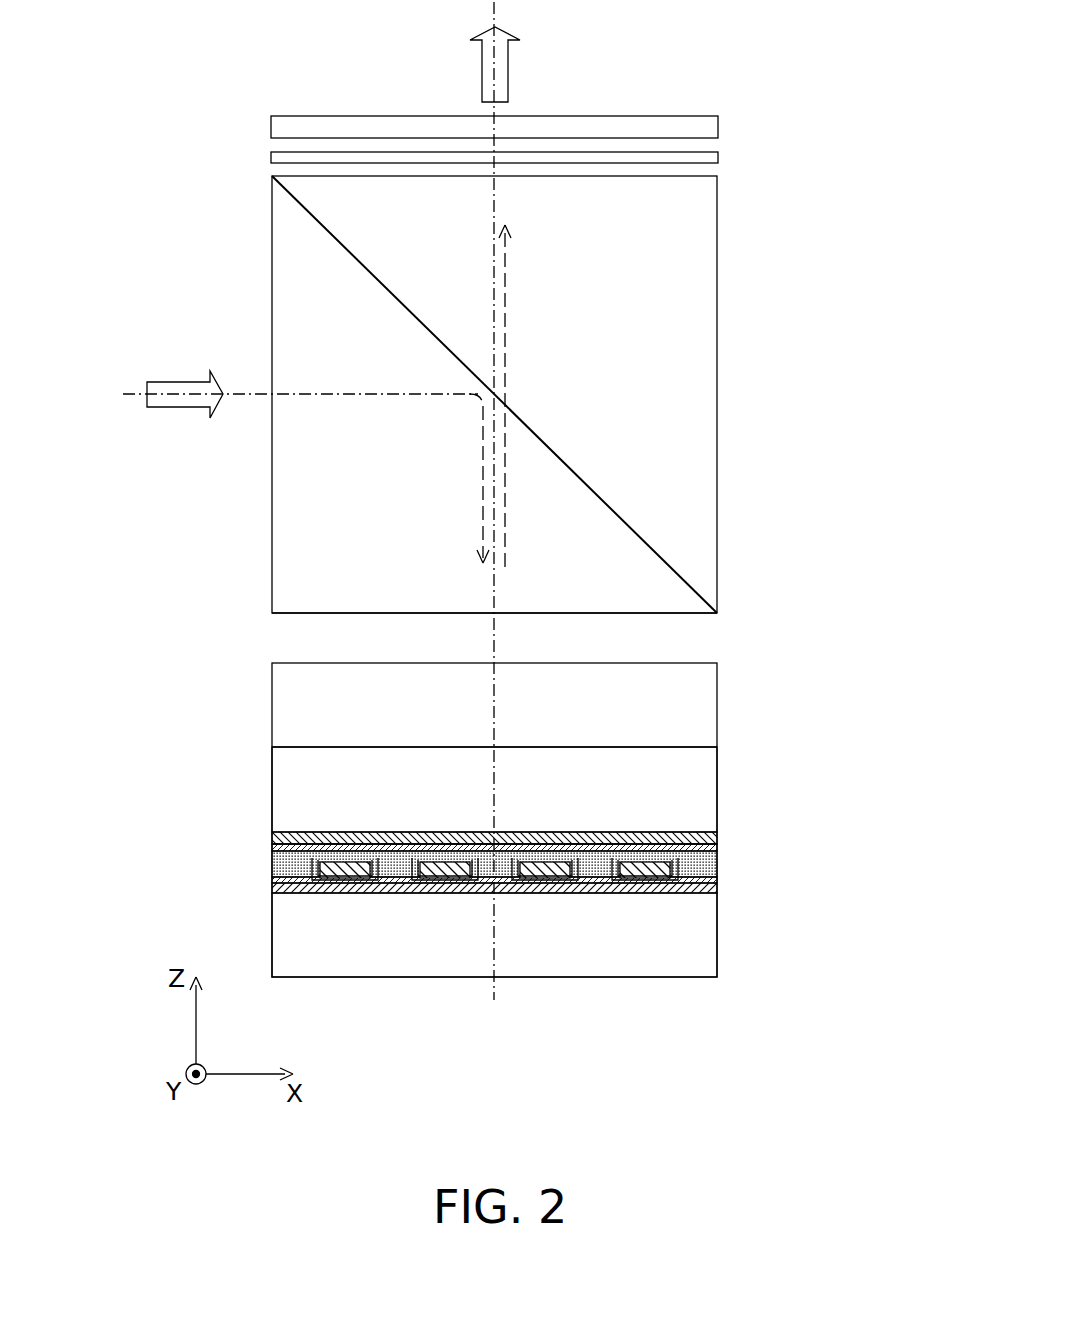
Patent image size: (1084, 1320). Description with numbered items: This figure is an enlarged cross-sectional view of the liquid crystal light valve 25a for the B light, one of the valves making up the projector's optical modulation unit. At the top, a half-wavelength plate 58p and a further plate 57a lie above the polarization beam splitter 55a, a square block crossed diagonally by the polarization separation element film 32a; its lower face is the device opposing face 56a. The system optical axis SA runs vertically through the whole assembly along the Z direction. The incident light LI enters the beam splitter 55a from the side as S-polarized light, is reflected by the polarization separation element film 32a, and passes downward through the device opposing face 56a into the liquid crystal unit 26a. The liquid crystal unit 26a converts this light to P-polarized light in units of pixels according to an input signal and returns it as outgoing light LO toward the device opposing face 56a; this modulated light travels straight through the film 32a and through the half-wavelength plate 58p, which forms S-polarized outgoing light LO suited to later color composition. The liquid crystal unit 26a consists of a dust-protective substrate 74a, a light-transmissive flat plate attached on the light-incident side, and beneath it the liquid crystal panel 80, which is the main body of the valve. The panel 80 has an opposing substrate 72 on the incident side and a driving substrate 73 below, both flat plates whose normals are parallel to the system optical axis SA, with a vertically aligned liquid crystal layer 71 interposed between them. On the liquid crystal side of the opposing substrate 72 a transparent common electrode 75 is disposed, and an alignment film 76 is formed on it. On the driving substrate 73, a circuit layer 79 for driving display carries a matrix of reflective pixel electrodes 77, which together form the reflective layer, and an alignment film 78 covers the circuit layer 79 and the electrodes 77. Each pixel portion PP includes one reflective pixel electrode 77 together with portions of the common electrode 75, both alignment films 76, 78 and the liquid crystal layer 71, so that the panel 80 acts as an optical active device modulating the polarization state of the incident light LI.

The liquid crystal light valve 25a is at (903, 49).
The half-wavelength plate 58p is at (718, 127).
The quarter-wave plate 57a is at (718, 157).
The polarization beam splitter 55a is at (599, 412).
The polarization separation element film 32a is at (678, 572).
The device opposing face 56a is at (683, 615).
The liquid crystal unit 26a is at (258, 663).
The dust-protective substrate 74a is at (710, 700).
The opposing substrate 72 is at (705, 782).
The common electrode 75 is at (718, 835).
The liquid crystal layer 71 is at (718, 862).
The circuit layer 79 is at (718, 890).
The driving substrate 73 is at (536, 935).
The alignment film 76 is at (402, 845).
The reflective pixel electrode 77 is at (345, 882).
The alignment film 78 is at (453, 882).
The liquid crystal panel 80 is at (568, 862).
The outgoing light LO is at (482, 70).
The incident light LI is at (178, 392).
The system optical axis SA is at (494, 637).
The pixel portion PP is at (660, 827).